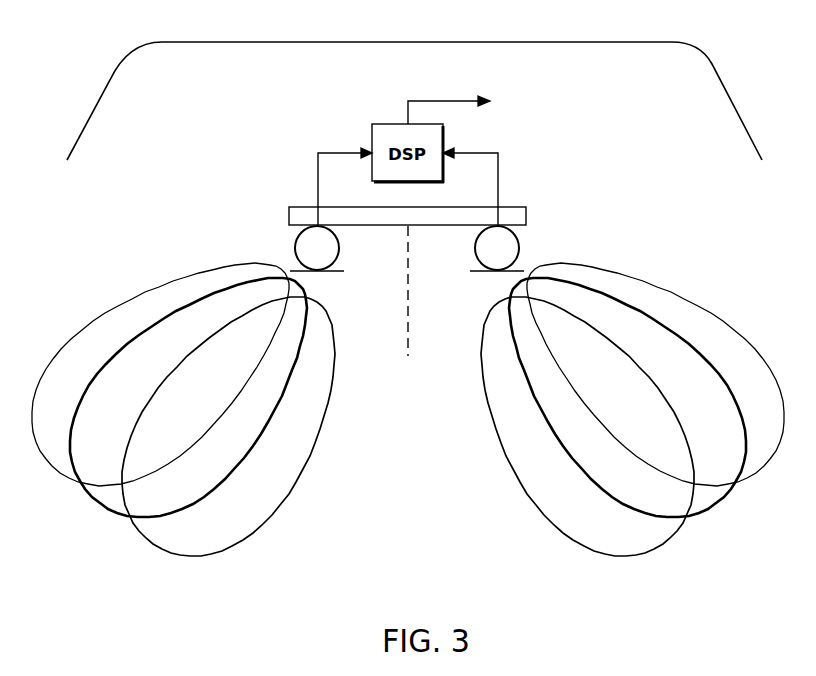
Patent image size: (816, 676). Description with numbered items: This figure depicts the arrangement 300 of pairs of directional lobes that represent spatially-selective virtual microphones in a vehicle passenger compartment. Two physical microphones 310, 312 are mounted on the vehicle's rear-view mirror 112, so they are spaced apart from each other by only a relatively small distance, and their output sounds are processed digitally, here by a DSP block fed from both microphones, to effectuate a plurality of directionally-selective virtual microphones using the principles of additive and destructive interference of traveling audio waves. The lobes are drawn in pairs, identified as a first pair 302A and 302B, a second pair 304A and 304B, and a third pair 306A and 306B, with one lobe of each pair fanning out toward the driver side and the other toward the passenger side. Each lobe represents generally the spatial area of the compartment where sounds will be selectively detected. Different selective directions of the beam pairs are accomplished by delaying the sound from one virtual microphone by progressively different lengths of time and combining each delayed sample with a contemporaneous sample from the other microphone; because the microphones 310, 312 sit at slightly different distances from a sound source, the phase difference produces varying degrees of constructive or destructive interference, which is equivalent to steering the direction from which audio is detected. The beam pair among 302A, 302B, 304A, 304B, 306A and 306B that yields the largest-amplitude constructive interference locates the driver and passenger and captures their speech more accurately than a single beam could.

The vehicle 300 is at (208, 102).
The rear-view mirror 112 is at (520, 206).
The physical microphone 310 is at (330, 249).
The physical microphone 312 is at (483, 248).
The directional lobe 302A is at (193, 560).
The directional lobe 304A is at (113, 515).
The directional lobe 306A is at (70, 479).
The directional lobe 302B is at (746, 479).
The directional lobe 304B is at (703, 515).
The directional lobe 306B is at (611, 559).